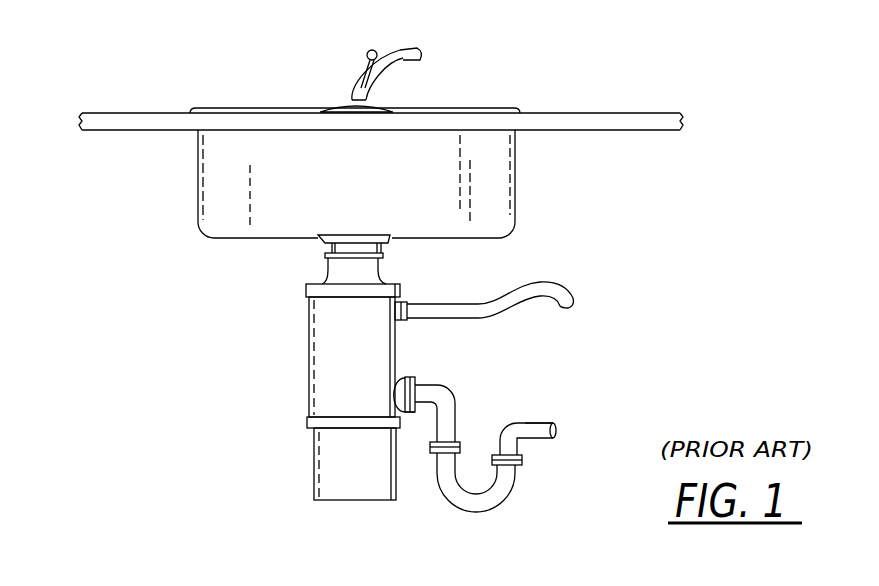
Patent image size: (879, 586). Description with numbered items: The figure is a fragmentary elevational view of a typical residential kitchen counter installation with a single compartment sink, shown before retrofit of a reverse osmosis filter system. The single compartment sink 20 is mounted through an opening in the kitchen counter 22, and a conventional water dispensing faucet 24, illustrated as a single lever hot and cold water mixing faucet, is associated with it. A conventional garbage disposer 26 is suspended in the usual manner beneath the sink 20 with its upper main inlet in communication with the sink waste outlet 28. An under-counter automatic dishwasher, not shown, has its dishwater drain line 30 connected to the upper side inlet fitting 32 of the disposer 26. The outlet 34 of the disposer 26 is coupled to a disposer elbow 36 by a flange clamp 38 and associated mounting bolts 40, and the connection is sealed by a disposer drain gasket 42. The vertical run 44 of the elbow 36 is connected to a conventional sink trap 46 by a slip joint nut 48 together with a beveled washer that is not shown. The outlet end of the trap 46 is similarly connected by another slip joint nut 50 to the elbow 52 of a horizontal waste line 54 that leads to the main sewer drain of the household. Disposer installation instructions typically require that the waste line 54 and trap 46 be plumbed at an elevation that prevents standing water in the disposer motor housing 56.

The single compartment sink 20 is at (196, 188).
The kitchen counter 22 is at (148, 110).
The water dispensing faucet 24 is at (403, 49).
The garbage disposer 26 is at (306, 318).
The sink waste outlet 28 is at (396, 243).
The dishwater drain line 30 is at (497, 297).
The upper side inlet fitting 32 is at (398, 320).
The outlet 34 is at (392, 392).
The disposer elbow 36 is at (470, 393).
The flange clamp 38 is at (407, 418).
The mounting bolts 40 is at (416, 383).
The disposer drain gasket 42 is at (412, 379).
The vertical run 44 is at (458, 421).
The sink trap 46 is at (455, 511).
The slip joint nut 48 is at (432, 455).
The slip joint nut 50 is at (522, 462).
The elbow 52 is at (515, 442).
The horizontal waste line 54 is at (542, 421).
The disposer motor housing 56 is at (318, 470).